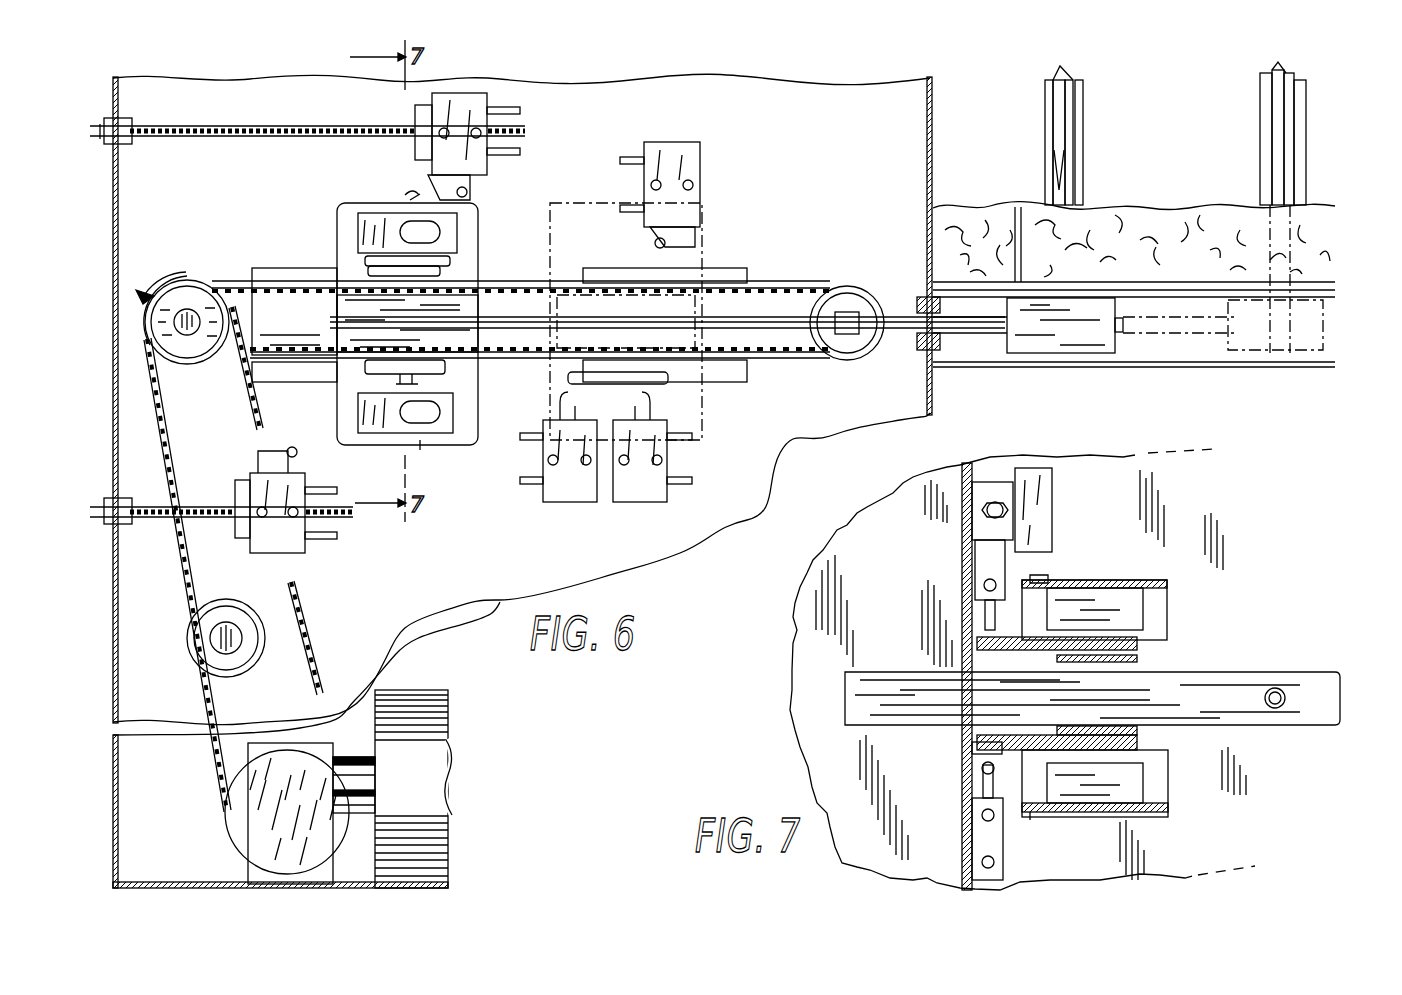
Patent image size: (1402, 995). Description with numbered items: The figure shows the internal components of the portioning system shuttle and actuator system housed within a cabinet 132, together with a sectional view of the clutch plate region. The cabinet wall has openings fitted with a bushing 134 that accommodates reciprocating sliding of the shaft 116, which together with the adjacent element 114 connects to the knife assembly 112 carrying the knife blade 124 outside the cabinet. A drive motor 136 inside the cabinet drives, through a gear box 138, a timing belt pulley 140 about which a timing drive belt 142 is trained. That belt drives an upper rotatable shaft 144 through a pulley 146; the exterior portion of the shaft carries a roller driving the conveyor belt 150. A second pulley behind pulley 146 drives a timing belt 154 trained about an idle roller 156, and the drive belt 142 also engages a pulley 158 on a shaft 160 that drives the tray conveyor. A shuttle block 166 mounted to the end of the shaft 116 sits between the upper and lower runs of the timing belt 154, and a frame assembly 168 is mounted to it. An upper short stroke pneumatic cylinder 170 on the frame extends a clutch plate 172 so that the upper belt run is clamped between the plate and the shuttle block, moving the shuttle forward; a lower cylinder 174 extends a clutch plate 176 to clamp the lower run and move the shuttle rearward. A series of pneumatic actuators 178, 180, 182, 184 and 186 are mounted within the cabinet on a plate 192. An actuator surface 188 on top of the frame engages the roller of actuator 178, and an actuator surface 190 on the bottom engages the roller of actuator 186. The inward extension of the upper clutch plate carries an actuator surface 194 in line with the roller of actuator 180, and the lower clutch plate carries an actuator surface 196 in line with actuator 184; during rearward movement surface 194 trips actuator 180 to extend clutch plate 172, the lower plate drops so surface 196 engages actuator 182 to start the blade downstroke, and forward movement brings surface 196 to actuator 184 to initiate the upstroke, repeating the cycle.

In FIG. 6, the knife assembly 112 is at (1100, 116).
In FIG. 6, the drive block 114 is at (1097, 355).
In FIG. 6, the shaft 116 is at (975, 336).
In FIG. 7, the shaft 116 is at (1283, 689).
In FIG. 6, the knife blade 124 is at (1080, 155).
In FIG. 6, the cabinet 132 is at (932, 162).
In FIG. 6, the bushing 134 is at (917, 352).
In FIG. 6, the drive motor 136 is at (413, 690).
In FIG. 6, the gear box 138 is at (320, 722).
In FIG. 6, the timing belt pulley 140 is at (226, 829).
In FIG. 6, the timing drive belt 142 is at (206, 745).
In FIG. 6, the upper rotatable shaft 144 is at (190, 316).
In FIG. 6, the pulley 146 is at (212, 368).
In FIG. 6, the conveyor belt 150 is at (1313, 288).
In FIG. 6, the timing belt 154 is at (238, 281).
In FIG. 6, the idle roller 156 is at (850, 287).
In FIG. 6, the pulley 158 is at (237, 601).
In FIG. 6, the shaft 160 is at (240, 654).
In FIG. 6, the shuttle block 166 is at (331, 318).
In FIG. 7, the shuttle block 166 is at (1198, 672).
In FIG. 6, the frame assembly 168 is at (479, 252).
In FIG. 6, the upper short stroke pneumatic cylinder 170 is at (458, 228).
In FIG. 7, the upper short stroke pneumatic cylinder 170 is at (1150, 612).
In FIG. 6, the clutch plate 172 is at (452, 265).
In FIG. 7, the clutch plate 172 is at (1150, 646).
In FIG. 6, the lower cylinder 174 is at (358, 413).
In FIG. 7, the lower cylinder 174 is at (1150, 796).
In FIG. 6, the clutch plate 176 is at (372, 370).
In FIG. 7, the clutch plate 176 is at (1140, 742).
In FIG. 6, the pneumatic actuator 178 is at (496, 103).
In FIG. 7, the pneumatic actuator 178 is at (1062, 489).
In FIG. 6, the pneumatic actuator 180 is at (665, 130).
In FIG. 7, the pneumatic actuator 180 is at (1020, 560).
In FIG. 6, the pneumatic actuator 182 is at (644, 510).
In FIG. 6, the pneumatic actuator 184 is at (570, 510).
In FIG. 7, the pneumatic actuator 184 is at (1014, 852).
In FIG. 6, the pneumatic actuator 186 is at (315, 548).
In FIG. 6, the actuator surface 188 is at (398, 203).
In FIG. 7, the actuator surface 188 is at (1040, 577).
In FIG. 6, the actuator surface 190 is at (425, 446).
In FIG. 7, the actuator surface 190 is at (1035, 816).
In FIG. 7, the plate 192 is at (962, 547).
In FIG. 7, the actuator surface 194 is at (1010, 632).
In FIG. 7, the actuator surface 196 is at (972, 750).